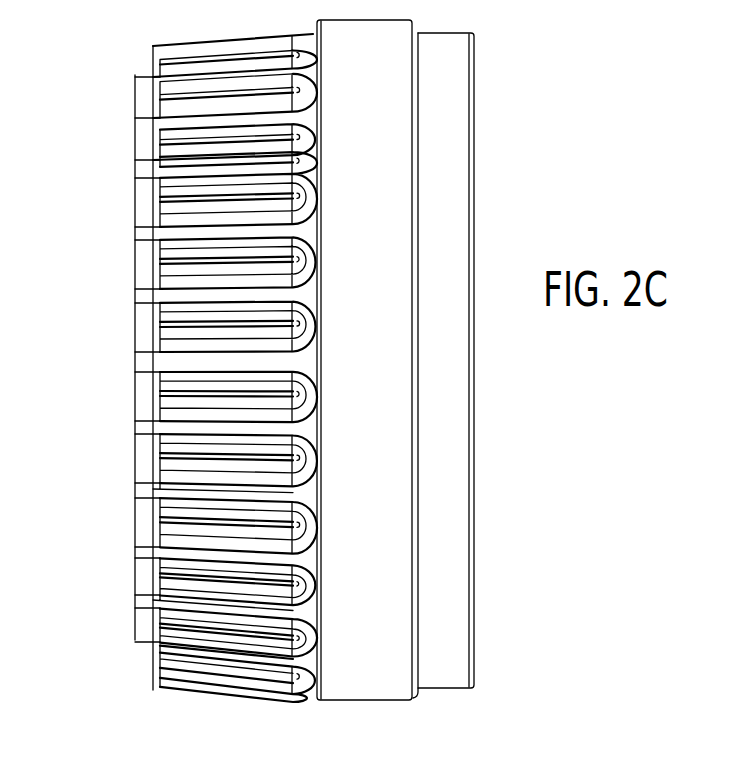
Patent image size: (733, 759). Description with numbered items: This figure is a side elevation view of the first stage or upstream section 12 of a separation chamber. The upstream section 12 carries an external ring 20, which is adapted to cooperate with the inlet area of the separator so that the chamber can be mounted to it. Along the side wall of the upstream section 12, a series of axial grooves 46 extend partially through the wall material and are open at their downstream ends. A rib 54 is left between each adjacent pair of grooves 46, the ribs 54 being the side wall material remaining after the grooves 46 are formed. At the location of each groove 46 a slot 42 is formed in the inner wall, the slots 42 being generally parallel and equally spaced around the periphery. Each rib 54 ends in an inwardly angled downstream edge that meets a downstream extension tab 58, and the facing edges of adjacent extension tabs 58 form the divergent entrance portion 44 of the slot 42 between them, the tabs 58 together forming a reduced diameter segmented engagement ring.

The upstream section 12 is at (527, 168).
The ring 20 is at (370, 690).
The slots 42 is at (193, 330).
The divergent entrance portion 44 is at (140, 165).
The downstream extension tabs 58 is at (145, 475).
The ribs 54 is at (165, 598).
The axial grooves 46 is at (242, 623).